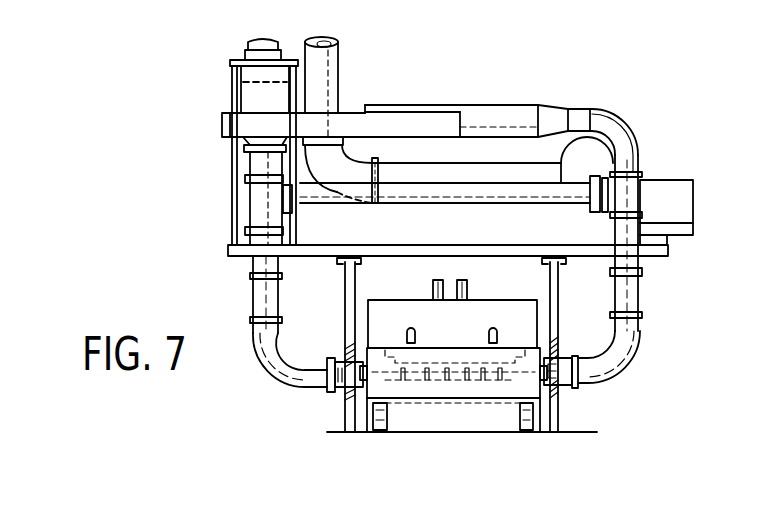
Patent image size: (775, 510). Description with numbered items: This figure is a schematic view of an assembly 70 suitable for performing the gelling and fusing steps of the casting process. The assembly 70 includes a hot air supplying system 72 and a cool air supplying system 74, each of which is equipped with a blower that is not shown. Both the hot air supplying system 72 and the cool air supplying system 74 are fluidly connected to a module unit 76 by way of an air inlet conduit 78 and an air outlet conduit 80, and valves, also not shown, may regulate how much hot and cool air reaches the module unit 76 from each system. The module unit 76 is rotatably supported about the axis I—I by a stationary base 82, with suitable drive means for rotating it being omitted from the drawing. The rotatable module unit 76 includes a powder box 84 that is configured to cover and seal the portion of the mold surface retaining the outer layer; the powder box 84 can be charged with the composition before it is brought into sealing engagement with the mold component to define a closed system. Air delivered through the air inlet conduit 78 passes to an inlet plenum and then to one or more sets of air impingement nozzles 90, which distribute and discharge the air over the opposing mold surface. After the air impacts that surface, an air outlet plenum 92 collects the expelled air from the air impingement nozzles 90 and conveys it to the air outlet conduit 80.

The assembly 70 is at (473, 249).
The hot air supplying system 72 is at (494, 107).
The cool air supplying system 74 is at (575, 152).
The module unit 76 is at (403, 290).
The air inlet conduit 78 is at (634, 356).
The air outlet conduit 80 is at (281, 374).
The stationary base 82 is at (465, 244).
The powder box 84 is at (507, 345).
The air impingement nozzles 90 is at (455, 381).
The air outlet plenum 92 is at (372, 387).